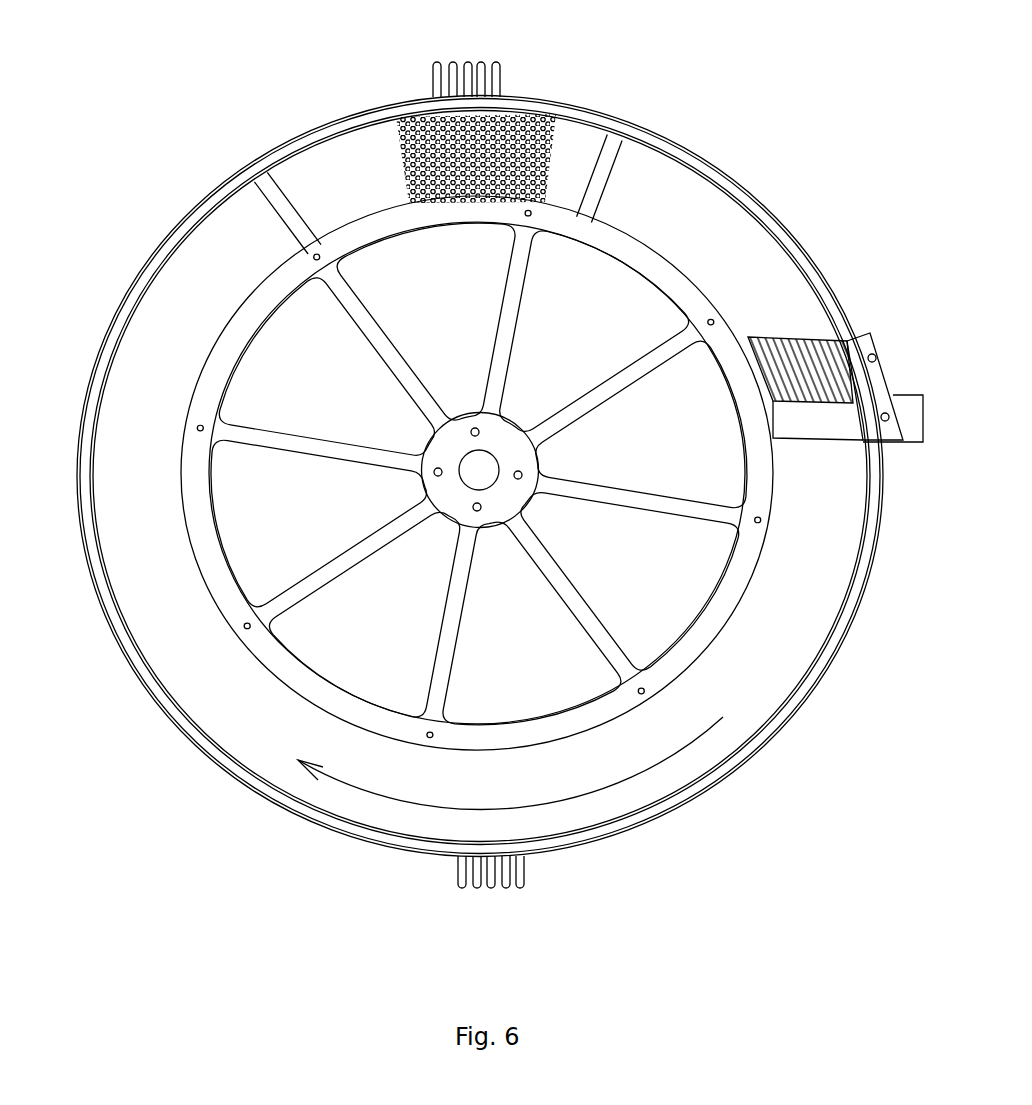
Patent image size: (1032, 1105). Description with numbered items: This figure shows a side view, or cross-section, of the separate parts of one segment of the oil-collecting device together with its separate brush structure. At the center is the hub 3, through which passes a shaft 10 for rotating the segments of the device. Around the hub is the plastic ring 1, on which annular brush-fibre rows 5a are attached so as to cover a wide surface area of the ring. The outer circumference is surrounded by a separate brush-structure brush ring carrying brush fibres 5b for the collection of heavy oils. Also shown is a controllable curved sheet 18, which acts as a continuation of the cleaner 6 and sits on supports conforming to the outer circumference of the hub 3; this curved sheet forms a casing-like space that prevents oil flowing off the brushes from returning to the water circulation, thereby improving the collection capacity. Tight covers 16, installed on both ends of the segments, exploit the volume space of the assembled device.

The plastic ring 1 is at (773, 655).
The hub 3 is at (678, 672).
The annular brush-fibre rows 5a is at (410, 142).
The brush fibres 5b is at (498, 82).
The cleaner 6 is at (873, 373).
The shaft 10 is at (258, 186).
The tight covers 16 is at (218, 345).
The curved sheet 18 is at (742, 188).